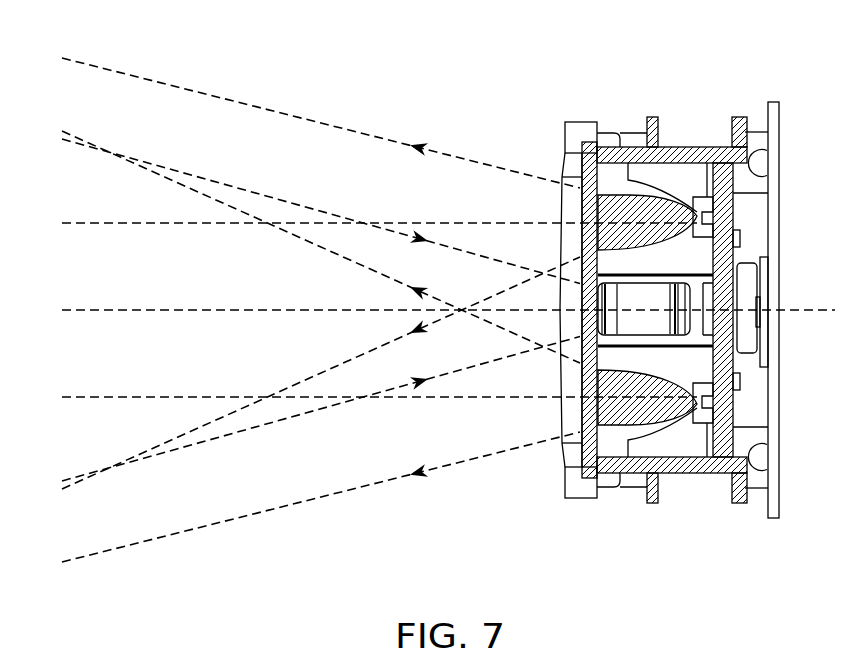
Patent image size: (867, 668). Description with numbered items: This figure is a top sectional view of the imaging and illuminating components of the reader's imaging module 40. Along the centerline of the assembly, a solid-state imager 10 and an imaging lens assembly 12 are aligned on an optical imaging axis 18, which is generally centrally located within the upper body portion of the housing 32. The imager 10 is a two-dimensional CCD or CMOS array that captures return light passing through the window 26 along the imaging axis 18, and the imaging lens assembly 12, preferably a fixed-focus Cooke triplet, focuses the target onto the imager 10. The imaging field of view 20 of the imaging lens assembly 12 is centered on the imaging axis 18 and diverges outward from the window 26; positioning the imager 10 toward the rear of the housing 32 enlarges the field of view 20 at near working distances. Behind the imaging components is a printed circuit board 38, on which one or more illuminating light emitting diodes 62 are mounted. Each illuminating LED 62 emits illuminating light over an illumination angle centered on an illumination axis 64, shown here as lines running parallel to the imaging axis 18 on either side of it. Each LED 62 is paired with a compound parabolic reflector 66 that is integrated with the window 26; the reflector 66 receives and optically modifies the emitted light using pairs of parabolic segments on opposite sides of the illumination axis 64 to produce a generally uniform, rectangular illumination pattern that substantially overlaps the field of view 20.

The solid-state imager 10 is at (712, 325).
The imaging lens assembly 12 is at (660, 328).
The optical imaging axis 18 is at (112, 310).
The imaging field of view 20 is at (112, 153).
The window 26 is at (592, 142).
The housing 32 is at (573, 488).
The printed circuit board 38 is at (727, 453).
The imaging module 40 is at (768, 32).
The light emitting diode 62 is at (713, 217).
The illumination axis 64 is at (112, 223).
The compound parabolic reflector 66 is at (647, 207).